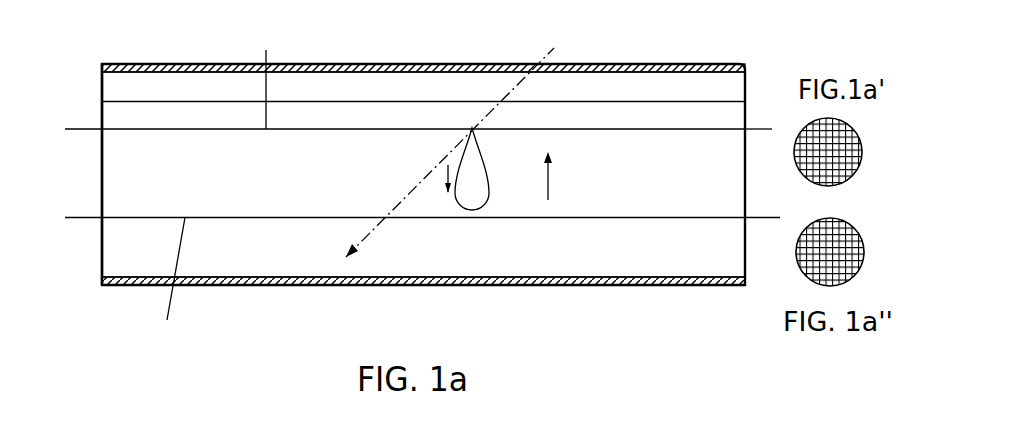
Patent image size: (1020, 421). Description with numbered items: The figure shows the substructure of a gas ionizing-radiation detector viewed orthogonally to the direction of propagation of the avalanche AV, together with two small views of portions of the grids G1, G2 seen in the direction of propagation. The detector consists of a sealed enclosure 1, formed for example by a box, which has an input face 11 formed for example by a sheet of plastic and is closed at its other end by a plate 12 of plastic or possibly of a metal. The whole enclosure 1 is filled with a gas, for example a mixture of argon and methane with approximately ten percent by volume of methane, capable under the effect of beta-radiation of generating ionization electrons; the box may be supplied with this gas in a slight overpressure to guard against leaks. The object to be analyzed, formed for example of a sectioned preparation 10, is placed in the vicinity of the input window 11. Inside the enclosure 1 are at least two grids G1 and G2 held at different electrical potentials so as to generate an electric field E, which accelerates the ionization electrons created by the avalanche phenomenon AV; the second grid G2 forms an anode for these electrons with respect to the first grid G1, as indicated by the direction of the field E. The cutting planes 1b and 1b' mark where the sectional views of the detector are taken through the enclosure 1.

The sealed enclosure 1 is at (101, 161).
The cutting plane 1b- 1b is at (420, 98).
The cutting plane 1b'- 1b' is at (426, 191).
The sectioned preparation 10 is at (606, 67).
The input face 11 is at (660, 101).
The plate 12 is at (668, 284).
The first grid G1 is at (265, 77).
The second grid G2 is at (174, 288).
The avalanche AV is at (477, 180).
The electric field E is at (578, 163).